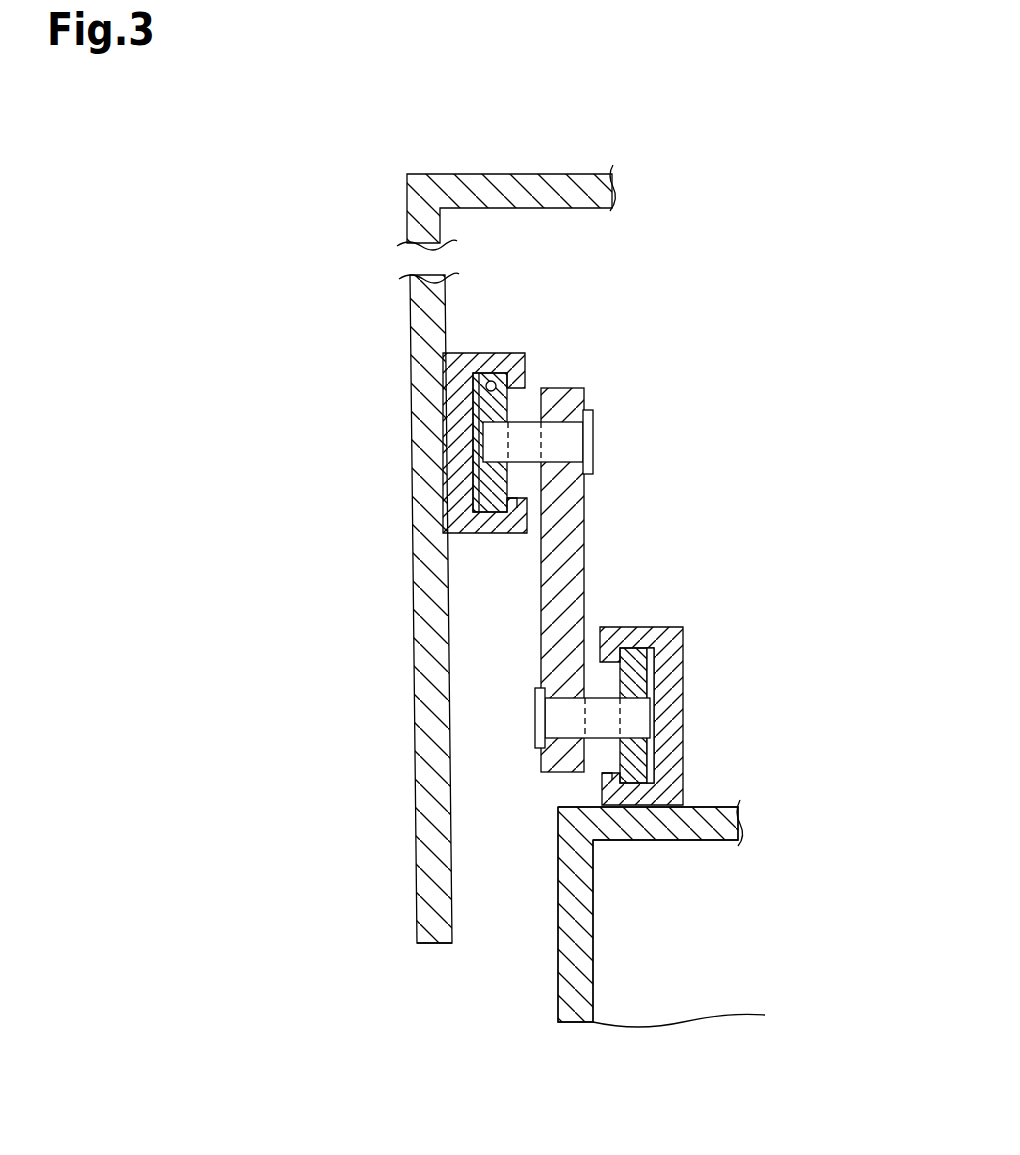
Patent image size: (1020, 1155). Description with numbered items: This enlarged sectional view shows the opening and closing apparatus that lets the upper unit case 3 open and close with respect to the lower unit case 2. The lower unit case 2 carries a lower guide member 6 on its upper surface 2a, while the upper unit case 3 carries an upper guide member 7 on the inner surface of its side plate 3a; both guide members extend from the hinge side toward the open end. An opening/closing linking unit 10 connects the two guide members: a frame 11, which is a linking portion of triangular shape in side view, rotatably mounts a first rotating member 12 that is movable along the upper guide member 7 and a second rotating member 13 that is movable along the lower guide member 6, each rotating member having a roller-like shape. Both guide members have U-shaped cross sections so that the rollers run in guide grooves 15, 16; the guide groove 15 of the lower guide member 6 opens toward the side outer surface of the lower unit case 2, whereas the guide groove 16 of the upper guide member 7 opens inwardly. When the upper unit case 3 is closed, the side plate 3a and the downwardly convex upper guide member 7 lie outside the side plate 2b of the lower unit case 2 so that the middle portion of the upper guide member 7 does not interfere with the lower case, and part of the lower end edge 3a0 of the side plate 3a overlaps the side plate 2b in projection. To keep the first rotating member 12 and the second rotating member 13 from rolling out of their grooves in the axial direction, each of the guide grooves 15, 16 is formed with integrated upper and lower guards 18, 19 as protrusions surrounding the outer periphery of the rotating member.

The lower unit case 2 is at (621, 914).
The upper surface 2a is at (673, 777).
The side plate 2b is at (524, 914).
The upper unit case 3 is at (466, 533).
The side plate 3a is at (386, 638).
The lower end edge 3a0 is at (385, 973).
The lower guide member 6 is at (681, 716).
The upper guide member 7 is at (422, 443).
The opening/closing linking unit 10 is at (558, 569).
The frame 11 is at (621, 580).
The first rotating member 12 is at (562, 411).
The second rotating member 13 is at (565, 748).
The guide groove 15 is at (701, 704).
The guide groove 16 is at (487, 328).
The upper guard 18 is at (561, 542).
The lower guard 19 is at (535, 686).